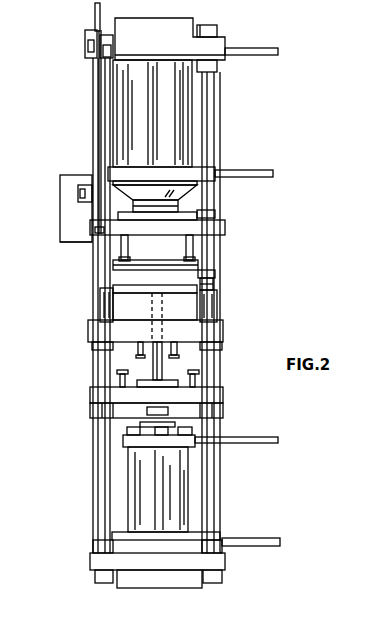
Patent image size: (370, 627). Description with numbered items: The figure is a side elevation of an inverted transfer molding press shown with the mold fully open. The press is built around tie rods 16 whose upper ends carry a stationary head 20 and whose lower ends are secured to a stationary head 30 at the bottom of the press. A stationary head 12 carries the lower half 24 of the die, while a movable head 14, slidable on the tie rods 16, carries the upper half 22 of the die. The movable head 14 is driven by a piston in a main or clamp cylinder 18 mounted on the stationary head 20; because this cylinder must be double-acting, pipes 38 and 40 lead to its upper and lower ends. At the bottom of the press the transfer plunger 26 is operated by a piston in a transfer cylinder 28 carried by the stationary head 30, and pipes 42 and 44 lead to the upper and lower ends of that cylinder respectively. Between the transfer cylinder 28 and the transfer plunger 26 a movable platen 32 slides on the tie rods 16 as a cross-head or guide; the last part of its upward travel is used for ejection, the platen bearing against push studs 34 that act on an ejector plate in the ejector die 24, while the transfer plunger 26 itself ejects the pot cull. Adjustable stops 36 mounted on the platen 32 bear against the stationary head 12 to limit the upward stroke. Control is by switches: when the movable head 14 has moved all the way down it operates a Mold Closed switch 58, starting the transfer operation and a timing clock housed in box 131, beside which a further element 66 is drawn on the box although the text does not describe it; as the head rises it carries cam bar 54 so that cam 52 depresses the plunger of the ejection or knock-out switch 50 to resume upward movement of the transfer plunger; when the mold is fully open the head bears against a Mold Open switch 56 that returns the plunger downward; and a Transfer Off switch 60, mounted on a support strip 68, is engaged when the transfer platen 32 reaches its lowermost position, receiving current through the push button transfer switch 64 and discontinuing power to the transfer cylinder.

The stationary head 12 is at (223, 326).
The movable head 14 is at (225, 230).
The tie rods 16 is at (215, 257).
The clamp cylinder 18 is at (180, 151).
The stationary head 20 is at (223, 50).
The upper half of the die 22 is at (212, 273).
The lower half of the die 24 is at (142, 286).
The transfer plunger 26 is at (160, 379).
The transfer cylinder 28 is at (190, 490).
The stationary head 30 is at (225, 566).
The movable platen 32 is at (223, 396).
The push studs 34 is at (141, 353).
The adjustable stops 36 is at (122, 374).
The pipe 38 is at (274, 48).
The pipe 40 is at (268, 171).
The pipe 42 is at (259, 437).
The pipe 44 is at (278, 539).
The ejection switch 50 is at (114, 46).
The cam 52 is at (96, 32).
The cam bar 54 is at (96, 164).
The Mold Open switch 56 is at (216, 214).
The Mold Closed switch 58 is at (214, 286).
The Transfer Off switch 60 is at (150, 411).
The push button transfer switch 64 is at (78, 243).
The limit switch 66 is at (80, 196).
The support strip 68 is at (100, 410).
The box 131 is at (60, 204).